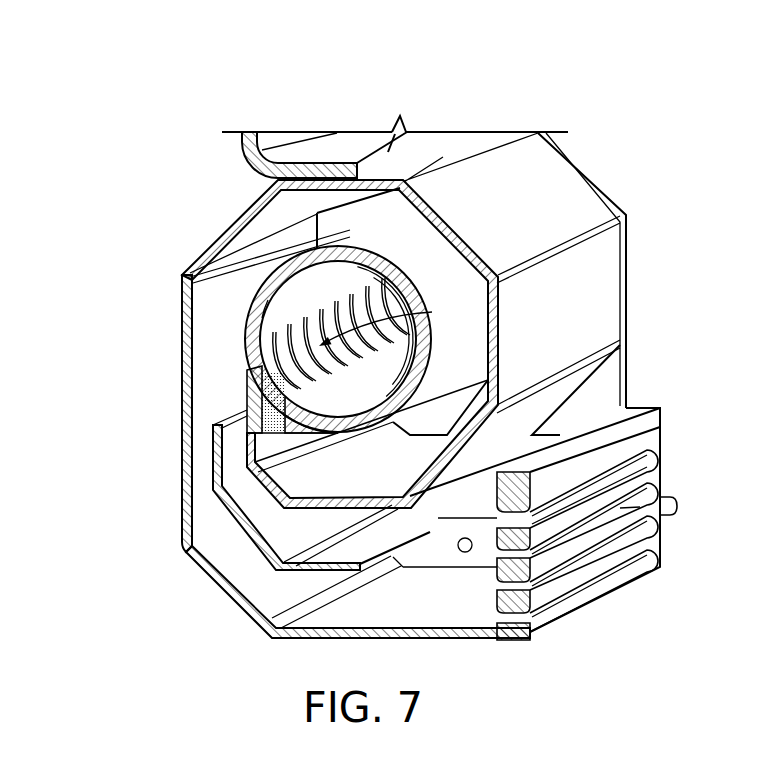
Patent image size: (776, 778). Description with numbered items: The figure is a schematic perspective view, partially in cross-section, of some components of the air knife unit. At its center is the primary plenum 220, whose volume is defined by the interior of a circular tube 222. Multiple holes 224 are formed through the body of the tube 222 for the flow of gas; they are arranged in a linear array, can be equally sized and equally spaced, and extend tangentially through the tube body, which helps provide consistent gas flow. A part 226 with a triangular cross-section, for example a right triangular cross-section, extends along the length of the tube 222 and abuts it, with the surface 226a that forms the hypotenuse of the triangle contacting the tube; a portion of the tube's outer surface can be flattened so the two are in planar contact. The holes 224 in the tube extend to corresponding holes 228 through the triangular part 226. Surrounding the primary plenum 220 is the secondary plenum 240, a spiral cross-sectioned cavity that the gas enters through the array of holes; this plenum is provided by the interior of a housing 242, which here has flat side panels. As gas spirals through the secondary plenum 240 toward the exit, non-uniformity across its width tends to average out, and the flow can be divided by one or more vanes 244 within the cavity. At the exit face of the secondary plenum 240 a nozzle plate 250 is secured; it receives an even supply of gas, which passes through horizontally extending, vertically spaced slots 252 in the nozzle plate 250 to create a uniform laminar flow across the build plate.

The primary plenum 220 is at (183, 275).
The circular tube 222 is at (283, 262).
The holes 224 is at (432, 312).
The part with a triangular cross-section 226 is at (249, 403).
The surface 226a is at (275, 318).
The holes 228 is at (270, 420).
The secondary plenum 240 is at (233, 550).
The housing 242 is at (227, 592).
The vanes 244 is at (217, 457).
The nozzle plate 250 is at (642, 430).
The slots 252 is at (662, 503).